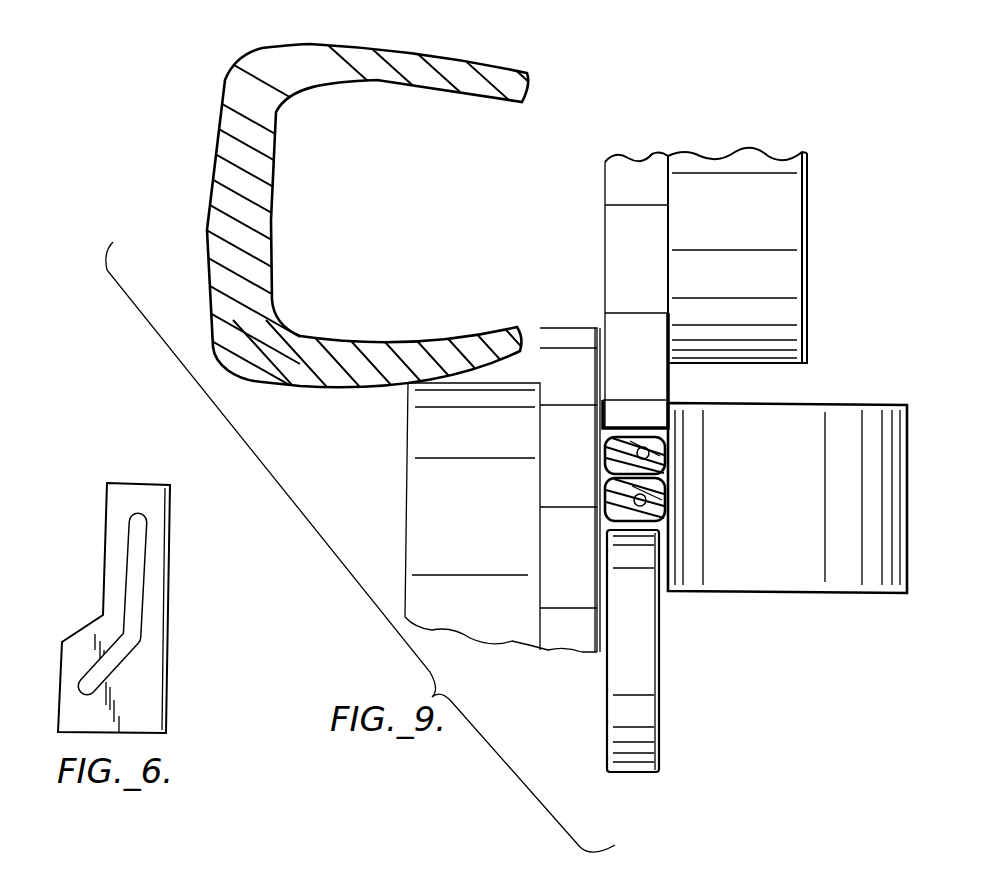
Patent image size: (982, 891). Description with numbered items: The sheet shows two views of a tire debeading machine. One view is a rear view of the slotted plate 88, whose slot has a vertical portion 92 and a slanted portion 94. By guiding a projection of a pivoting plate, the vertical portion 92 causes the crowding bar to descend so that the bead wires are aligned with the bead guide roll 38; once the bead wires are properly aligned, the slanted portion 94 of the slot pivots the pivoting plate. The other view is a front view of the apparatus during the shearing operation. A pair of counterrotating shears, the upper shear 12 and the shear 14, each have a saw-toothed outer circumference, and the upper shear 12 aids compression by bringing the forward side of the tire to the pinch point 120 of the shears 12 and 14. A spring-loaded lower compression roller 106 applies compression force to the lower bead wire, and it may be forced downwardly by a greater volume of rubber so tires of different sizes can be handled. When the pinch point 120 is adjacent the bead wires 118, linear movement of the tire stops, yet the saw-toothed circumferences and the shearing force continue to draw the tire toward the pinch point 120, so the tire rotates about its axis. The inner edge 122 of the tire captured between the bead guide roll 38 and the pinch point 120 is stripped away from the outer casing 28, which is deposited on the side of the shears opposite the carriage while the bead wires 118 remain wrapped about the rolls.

In FIG. 9, the upper shear 12 is at (619, 243).
In FIG. 9, the shear 14 is at (557, 421).
In FIG. 9, the outer casing 28 is at (343, 384).
In FIG. 9, the bead guide roll 38 is at (845, 583).
In FIG. 9, the lower compression roller 106 is at (620, 738).
In FIG. 9, the bead wires 118 is at (606, 498).
In FIG. 9, the pinch point 120 is at (606, 423).
In FIG. 9, the inner edge 122 is at (661, 496).
In FIG. 6, the slotted plate 88 is at (160, 548).
In FIG. 6, the vertical portion 92 is at (141, 607).
In FIG. 6, the slanted portion 94 is at (124, 653).